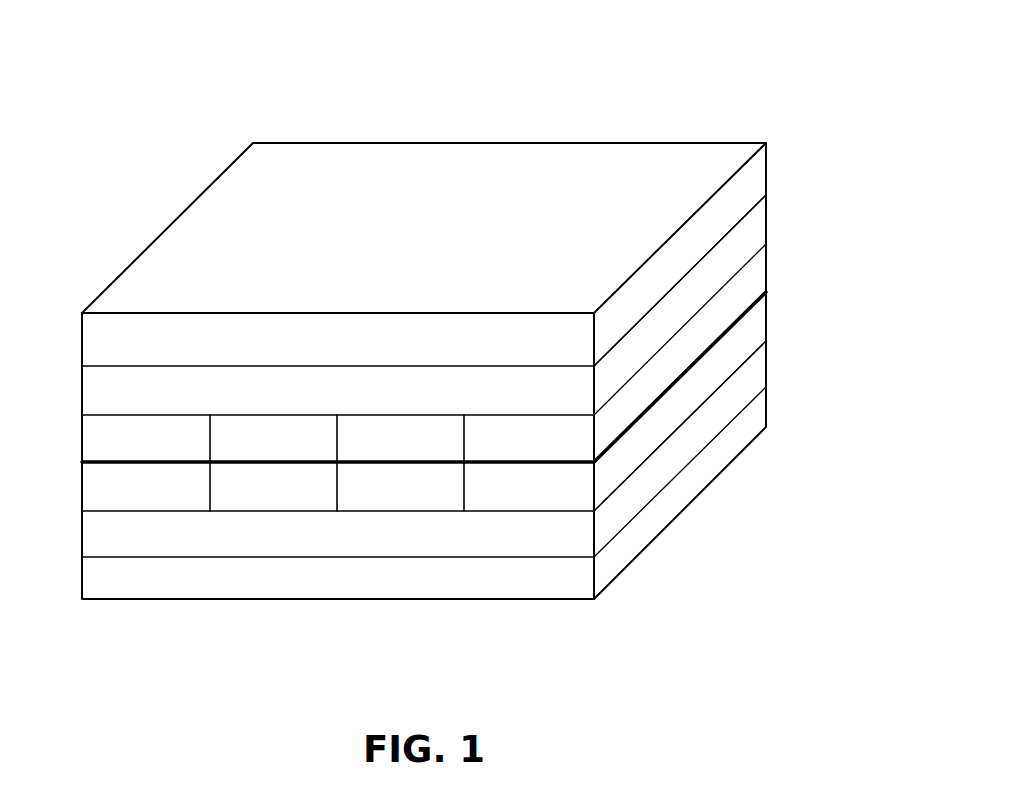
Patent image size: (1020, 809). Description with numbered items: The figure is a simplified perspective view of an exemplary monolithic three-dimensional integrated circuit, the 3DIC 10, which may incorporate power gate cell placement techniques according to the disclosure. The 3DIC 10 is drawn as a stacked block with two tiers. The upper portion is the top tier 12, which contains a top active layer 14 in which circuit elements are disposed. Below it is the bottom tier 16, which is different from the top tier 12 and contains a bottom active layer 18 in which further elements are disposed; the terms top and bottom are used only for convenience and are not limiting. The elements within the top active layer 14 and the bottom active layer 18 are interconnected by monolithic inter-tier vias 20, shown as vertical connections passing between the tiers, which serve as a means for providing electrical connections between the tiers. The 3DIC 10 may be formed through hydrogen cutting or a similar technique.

The 3DIC 10 is at (620, 86).
The top tier 12 is at (75, 313).
The top active layer 14 is at (723, 257).
The bottom tier 16 is at (75, 462).
The bottom active layer 18 is at (723, 402).
The monolithic inter-tier vias 20 is at (210, 493).